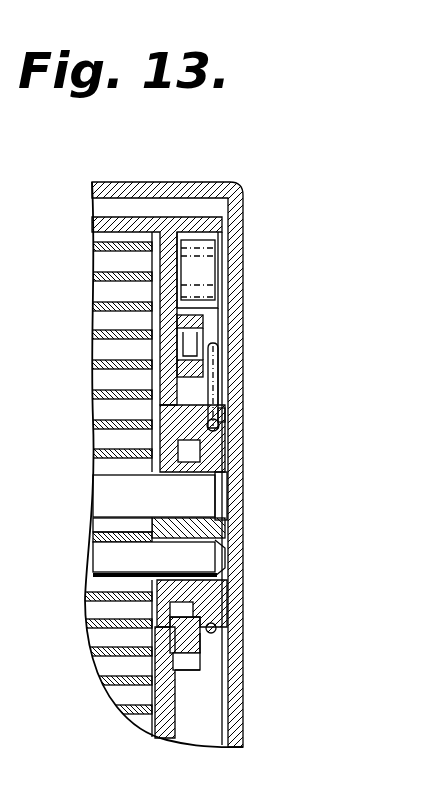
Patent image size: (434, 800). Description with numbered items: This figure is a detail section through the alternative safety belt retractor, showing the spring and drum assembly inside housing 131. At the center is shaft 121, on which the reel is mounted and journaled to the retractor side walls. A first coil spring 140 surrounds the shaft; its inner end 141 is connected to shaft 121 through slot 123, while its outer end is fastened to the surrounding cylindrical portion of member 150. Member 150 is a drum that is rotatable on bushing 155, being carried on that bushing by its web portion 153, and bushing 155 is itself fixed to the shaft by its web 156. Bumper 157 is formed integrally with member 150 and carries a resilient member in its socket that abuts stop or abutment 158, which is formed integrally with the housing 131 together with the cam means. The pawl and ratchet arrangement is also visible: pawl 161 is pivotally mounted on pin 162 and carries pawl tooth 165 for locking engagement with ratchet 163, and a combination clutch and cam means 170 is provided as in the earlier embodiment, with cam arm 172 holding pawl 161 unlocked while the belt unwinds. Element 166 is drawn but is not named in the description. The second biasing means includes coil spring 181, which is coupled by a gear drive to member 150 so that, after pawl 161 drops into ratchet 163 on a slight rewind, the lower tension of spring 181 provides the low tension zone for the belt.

The housing 131 is at (200, 192).
The member 150 is at (114, 222).
The bumper 157 is at (207, 250).
The stop or abutment 158 is at (222, 277).
The pawl 161 is at (205, 320).
The pin 162 is at (195, 342).
The cam arm 172 is at (218, 352).
The stop element 166 is at (224, 408).
The pawl tooth 165 is at (212, 457).
The shaft 121 is at (110, 484).
The web 156 is at (213, 530).
The slot 123 is at (100, 522).
The inner end 141 is at (100, 542).
The bushing 155 is at (213, 593).
The combination clutch and cam means 170 is at (217, 623).
The ratchet 163 is at (190, 662).
The web portion 153 is at (183, 715).
The first coil spring 140 is at (108, 291).
The coil spring 181 is at (100, 660).